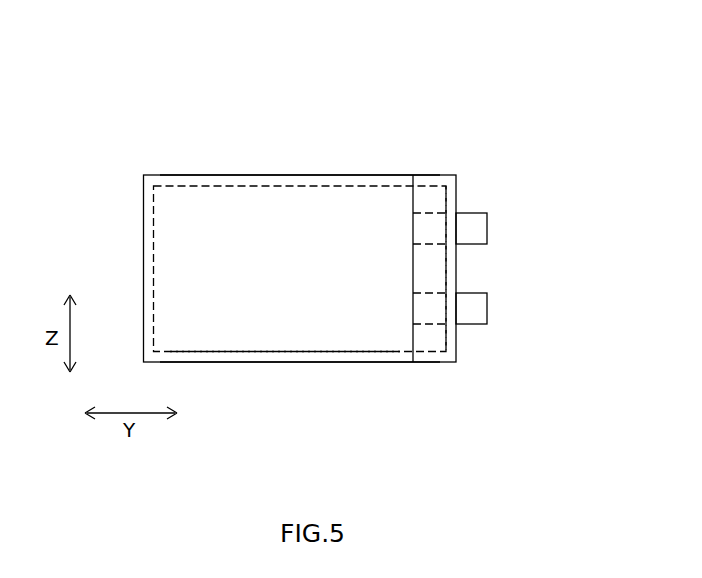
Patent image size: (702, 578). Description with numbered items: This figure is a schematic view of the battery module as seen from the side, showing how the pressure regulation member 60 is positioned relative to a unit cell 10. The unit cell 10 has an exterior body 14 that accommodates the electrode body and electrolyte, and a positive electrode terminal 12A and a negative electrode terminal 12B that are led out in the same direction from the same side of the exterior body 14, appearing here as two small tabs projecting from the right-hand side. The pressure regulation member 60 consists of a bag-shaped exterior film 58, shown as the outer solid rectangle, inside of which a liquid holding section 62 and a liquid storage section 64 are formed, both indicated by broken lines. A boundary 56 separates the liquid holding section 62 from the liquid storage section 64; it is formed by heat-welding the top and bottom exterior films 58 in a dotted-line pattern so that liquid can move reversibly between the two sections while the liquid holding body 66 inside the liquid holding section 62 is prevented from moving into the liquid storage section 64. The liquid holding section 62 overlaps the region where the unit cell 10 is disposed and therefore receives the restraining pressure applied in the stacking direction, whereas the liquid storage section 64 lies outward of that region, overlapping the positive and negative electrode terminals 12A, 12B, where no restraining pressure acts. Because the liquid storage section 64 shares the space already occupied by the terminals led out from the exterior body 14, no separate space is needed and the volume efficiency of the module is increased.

The unit cell 10 is at (363, 263).
The positive electrode terminal 12A is at (483, 232).
The negative electrode terminal 12B is at (484, 310).
The exterior body 14 is at (352, 363).
The boundary 56 is at (413, 337).
The exterior film 58 is at (182, 173).
The pressure regulation member 60 is at (348, 168).
The liquid holding section 62 is at (263, 205).
The liquid storage section 64 is at (430, 198).
The liquid holding body 66 is at (262, 322).